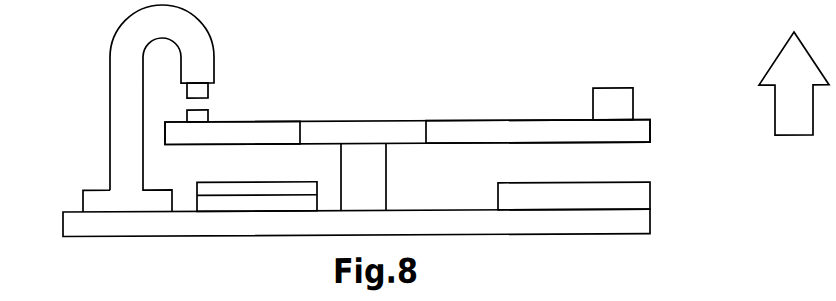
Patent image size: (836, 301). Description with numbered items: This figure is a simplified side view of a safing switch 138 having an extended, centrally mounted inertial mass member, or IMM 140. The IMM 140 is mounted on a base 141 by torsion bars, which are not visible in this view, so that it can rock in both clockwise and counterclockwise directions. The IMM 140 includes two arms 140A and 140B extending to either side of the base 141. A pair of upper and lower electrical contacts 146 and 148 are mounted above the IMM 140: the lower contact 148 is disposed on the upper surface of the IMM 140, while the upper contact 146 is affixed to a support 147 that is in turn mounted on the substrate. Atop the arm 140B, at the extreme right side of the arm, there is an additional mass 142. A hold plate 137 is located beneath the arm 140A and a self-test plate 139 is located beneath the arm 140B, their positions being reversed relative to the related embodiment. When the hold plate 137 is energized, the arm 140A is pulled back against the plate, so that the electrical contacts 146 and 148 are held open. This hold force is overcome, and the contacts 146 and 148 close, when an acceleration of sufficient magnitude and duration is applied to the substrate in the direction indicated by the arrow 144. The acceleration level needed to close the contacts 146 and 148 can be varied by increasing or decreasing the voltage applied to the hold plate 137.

The hold plate 137 is at (214, 205).
The safing switch 138 is at (503, 50).
The self-test plate 139 is at (645, 202).
The IMM 140 is at (337, 122).
The arm 140A is at (273, 145).
The arm 140B is at (482, 145).
The base 141 is at (372, 194).
The additional mass 142 is at (618, 91).
The arrow 144 is at (793, 76).
The upper electrical contact 146 is at (210, 91).
The support 147 is at (130, 17).
The lower electrical contact 148 is at (208, 118).